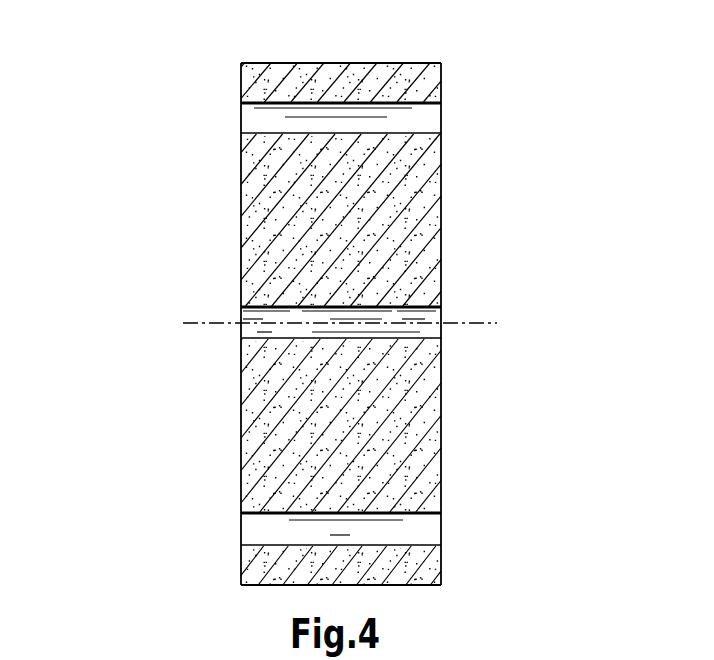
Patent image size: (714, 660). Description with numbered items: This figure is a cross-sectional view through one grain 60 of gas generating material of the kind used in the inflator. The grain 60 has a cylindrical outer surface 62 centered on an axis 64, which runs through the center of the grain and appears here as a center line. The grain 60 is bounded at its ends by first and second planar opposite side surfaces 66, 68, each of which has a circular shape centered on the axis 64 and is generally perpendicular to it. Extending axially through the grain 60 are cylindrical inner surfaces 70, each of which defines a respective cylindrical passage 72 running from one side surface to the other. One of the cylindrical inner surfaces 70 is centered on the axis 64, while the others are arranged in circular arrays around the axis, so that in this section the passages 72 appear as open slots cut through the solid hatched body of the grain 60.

The grain 60 is at (96, 91).
The cylindrical outer surface 62 is at (341, 63).
The axis 64 is at (183, 322).
The first planar side surface 66 is at (240, 82).
The second planar side surface 68 is at (442, 88).
The cylindrical inner surface 70 is at (266, 132).
The cylindrical passage 72 is at (228, 114).